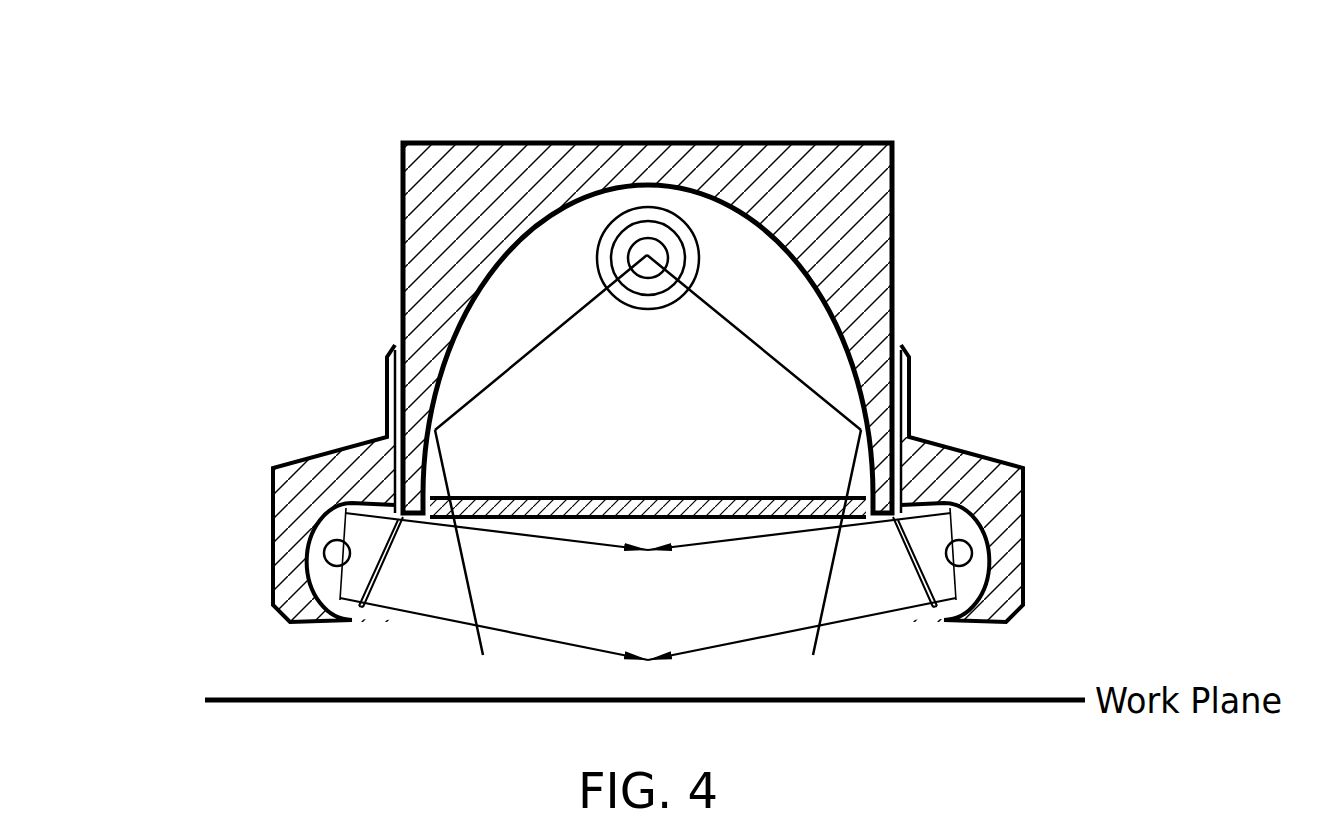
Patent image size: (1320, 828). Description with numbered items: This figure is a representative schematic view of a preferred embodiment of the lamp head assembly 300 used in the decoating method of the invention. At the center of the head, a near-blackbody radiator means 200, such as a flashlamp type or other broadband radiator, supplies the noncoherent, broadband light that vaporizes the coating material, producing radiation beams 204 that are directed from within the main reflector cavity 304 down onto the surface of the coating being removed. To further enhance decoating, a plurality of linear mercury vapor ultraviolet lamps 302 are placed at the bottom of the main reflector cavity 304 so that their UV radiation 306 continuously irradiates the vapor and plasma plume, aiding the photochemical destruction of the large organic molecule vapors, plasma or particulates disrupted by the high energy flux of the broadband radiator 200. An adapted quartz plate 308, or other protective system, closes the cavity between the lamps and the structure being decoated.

The lamp head assembly 300 is at (648, 312).
The near-blackbody radiator means 200 is at (633, 240).
The radiation beams 204 is at (440, 430).
The main reflector cavity 304 is at (647, 328).
The UV radiation 306 is at (555, 537).
The adapted quartz plate 308 is at (698, 500).
The linear mercury vapor ultraviolet lamps 302 is at (307, 548).